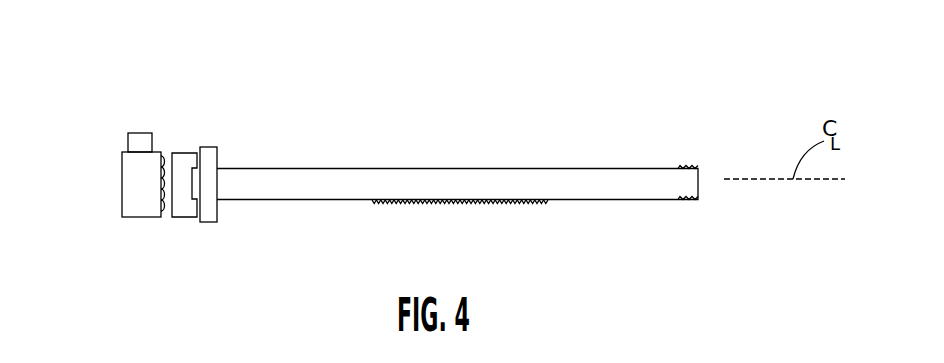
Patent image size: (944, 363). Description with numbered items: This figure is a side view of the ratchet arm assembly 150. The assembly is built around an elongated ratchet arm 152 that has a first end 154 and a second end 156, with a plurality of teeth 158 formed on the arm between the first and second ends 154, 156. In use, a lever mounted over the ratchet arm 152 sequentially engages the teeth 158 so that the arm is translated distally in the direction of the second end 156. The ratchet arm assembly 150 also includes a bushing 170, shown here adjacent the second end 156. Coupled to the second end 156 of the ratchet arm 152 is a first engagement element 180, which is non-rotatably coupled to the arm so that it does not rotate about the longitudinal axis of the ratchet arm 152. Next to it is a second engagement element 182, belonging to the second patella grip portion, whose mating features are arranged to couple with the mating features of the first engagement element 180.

The ratchet arm assembly 150 is at (637, 87).
The ratchet arm 152 is at (403, 178).
The first end 154 is at (705, 100).
The second end 156 is at (188, 115).
The teeth 158 is at (493, 201).
The bushing 170 is at (202, 222).
The first engagement element 180 is at (182, 206).
The second engagement element 182 is at (122, 157).